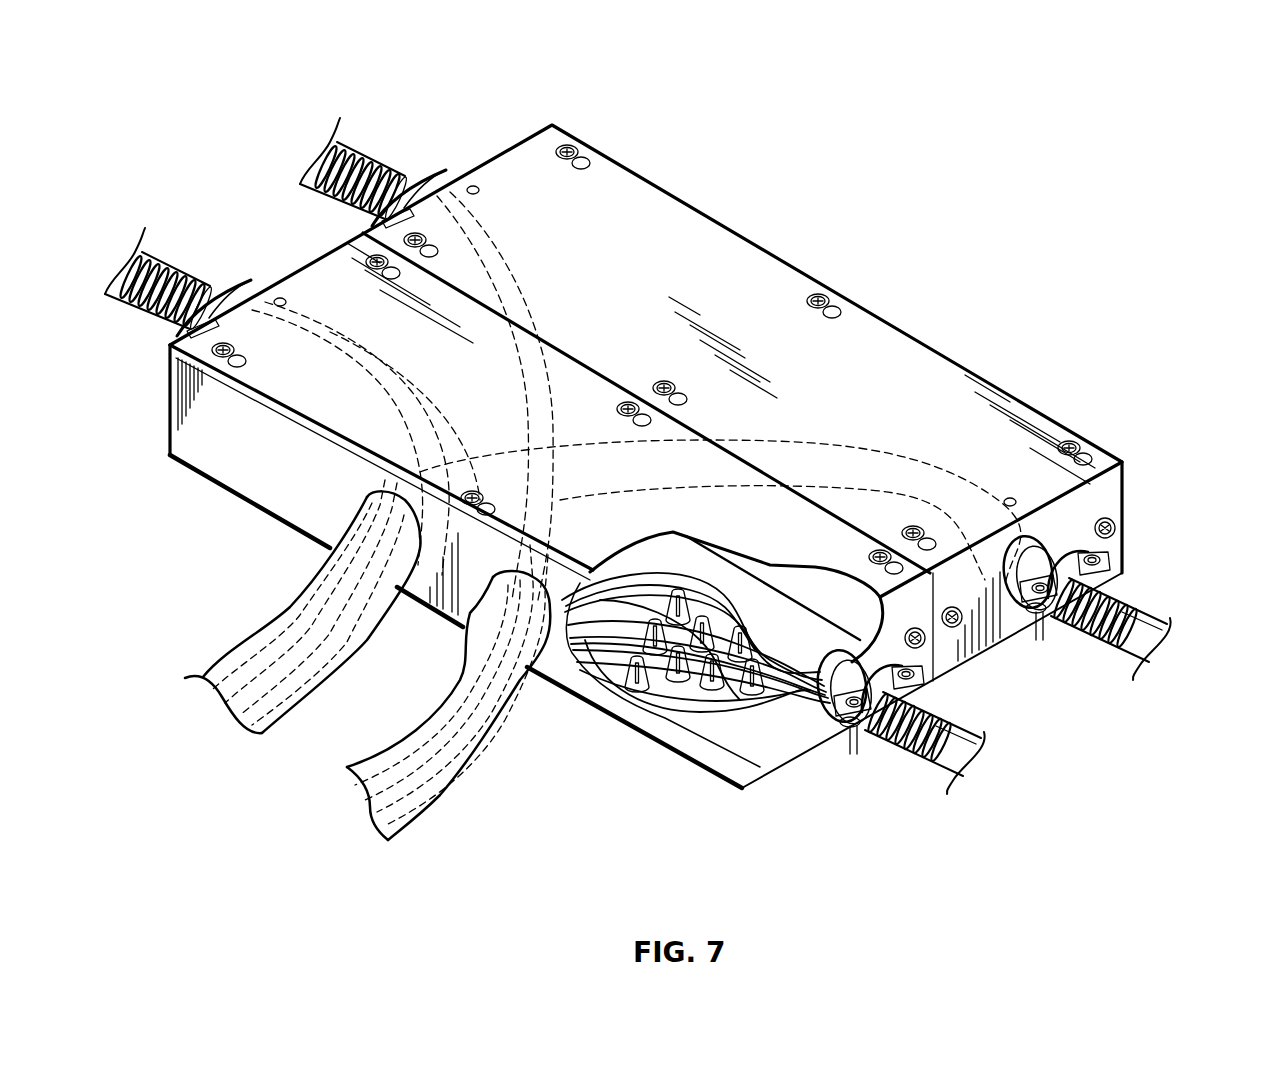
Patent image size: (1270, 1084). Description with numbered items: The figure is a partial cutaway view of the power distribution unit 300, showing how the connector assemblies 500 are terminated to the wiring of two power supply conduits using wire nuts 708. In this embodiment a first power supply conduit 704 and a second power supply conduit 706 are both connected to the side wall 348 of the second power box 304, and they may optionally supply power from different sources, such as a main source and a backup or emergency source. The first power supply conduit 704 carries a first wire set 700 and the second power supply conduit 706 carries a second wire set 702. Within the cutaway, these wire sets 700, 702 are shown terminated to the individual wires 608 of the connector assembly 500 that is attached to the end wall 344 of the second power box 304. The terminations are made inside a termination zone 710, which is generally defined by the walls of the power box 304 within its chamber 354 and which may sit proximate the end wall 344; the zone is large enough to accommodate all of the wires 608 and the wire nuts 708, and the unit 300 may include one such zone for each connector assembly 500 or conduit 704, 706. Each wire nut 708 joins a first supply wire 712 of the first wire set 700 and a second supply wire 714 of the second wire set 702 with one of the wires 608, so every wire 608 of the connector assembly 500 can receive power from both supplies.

The power distribution unit 300 is at (957, 198).
The second power box 304 is at (288, 248).
The end wall 344 is at (927, 668).
The side wall 348 is at (240, 457).
The chamber 354 is at (825, 585).
The connector assembly 500 is at (1147, 575).
The wires 608 is at (795, 740).
The first wire set 700 is at (506, 248).
The second wire set 702 is at (510, 298).
The first power supply conduit 704 is at (428, 733).
The second power supply conduit 706 is at (240, 637).
The wire nuts 708 is at (655, 710).
The termination zone 710 is at (668, 566).
The first supply wire 712 is at (705, 698).
The second supply wire 714 is at (712, 732).